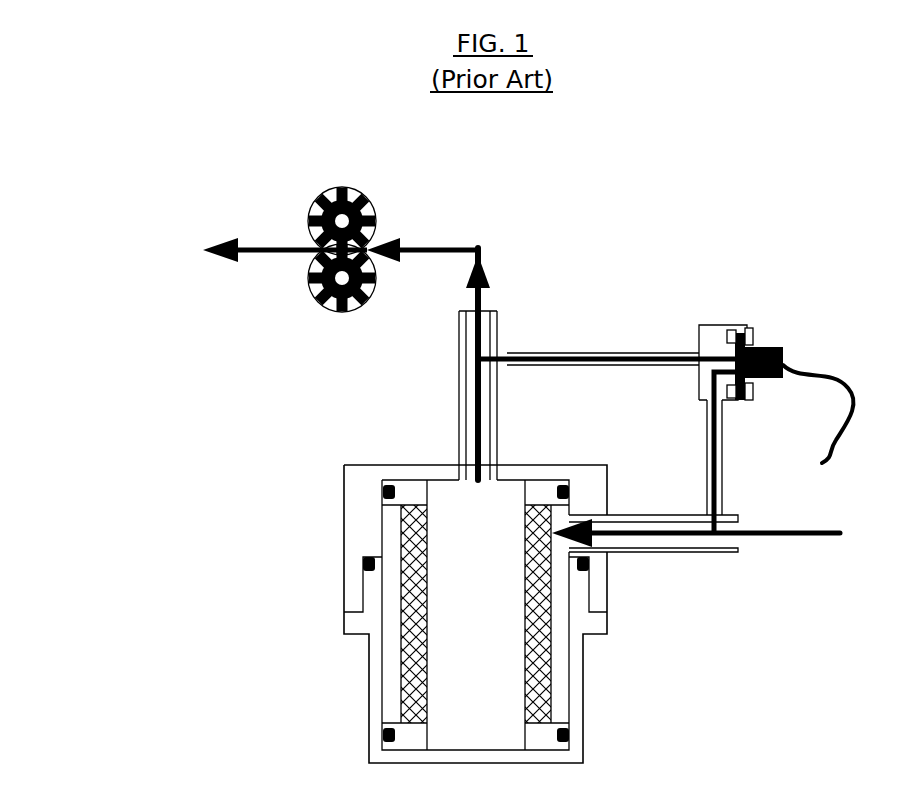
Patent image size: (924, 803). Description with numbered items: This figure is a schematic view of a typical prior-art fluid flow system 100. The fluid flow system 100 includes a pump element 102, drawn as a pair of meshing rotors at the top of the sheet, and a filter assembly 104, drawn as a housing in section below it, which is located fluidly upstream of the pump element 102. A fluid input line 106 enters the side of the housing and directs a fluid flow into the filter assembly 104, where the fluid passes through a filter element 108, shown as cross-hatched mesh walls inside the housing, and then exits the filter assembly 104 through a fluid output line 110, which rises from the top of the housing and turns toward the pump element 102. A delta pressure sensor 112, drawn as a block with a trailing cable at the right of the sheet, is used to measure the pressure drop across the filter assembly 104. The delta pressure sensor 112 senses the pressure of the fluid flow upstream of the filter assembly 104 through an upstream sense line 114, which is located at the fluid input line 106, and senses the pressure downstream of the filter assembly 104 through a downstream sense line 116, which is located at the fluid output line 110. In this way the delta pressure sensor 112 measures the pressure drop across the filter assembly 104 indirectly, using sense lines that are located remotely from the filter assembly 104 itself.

The fluid flow system 100 is at (262, 428).
The pump element 102 is at (347, 188).
The filter assembly 104 is at (340, 565).
The fluid input line 106 is at (672, 537).
The filter element 108 is at (545, 667).
The fluid output line 110 is at (457, 423).
The delta pressure sensor 112 is at (777, 340).
The upstream sense line 114 is at (717, 483).
The downstream sense line 116 is at (612, 357).